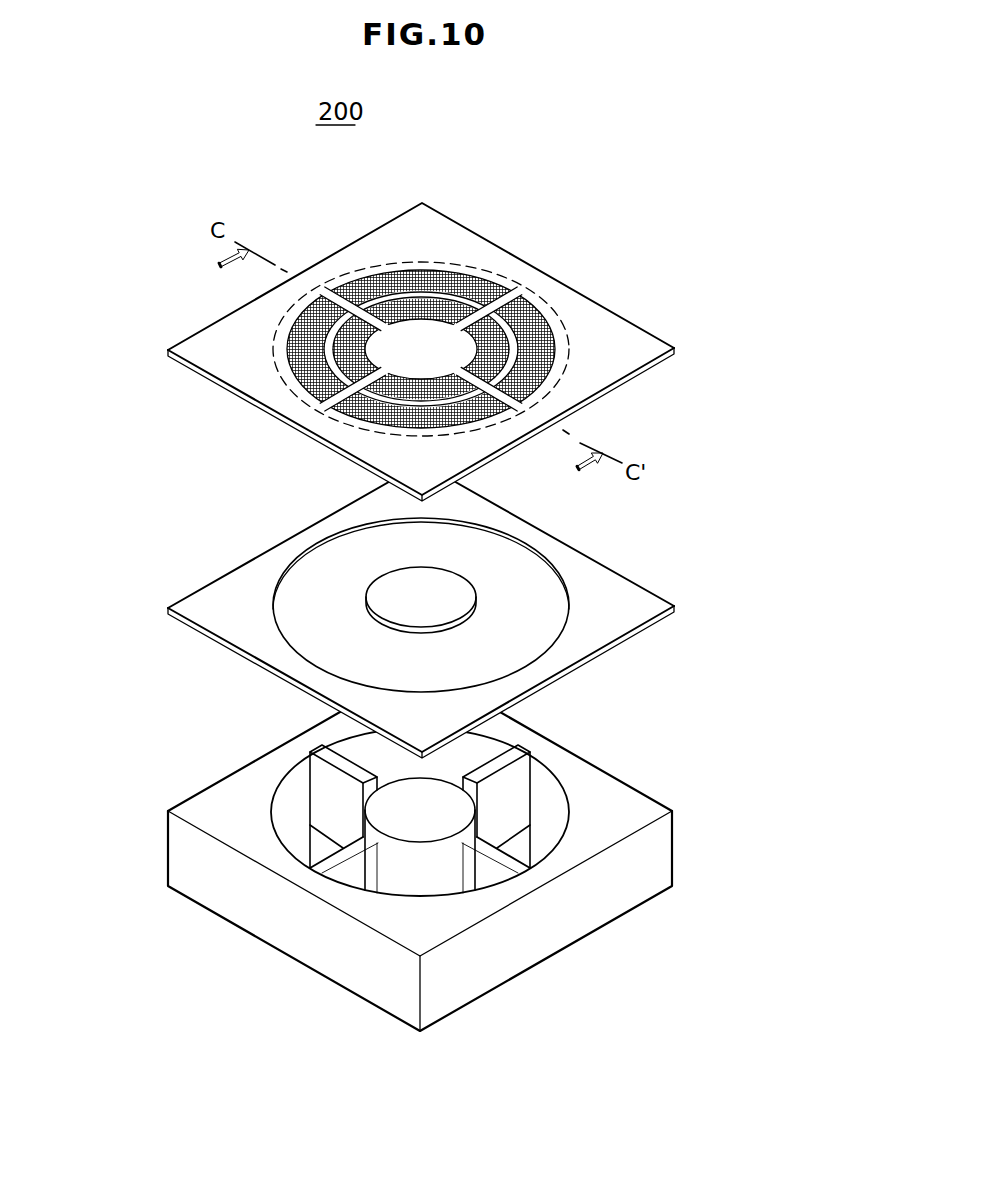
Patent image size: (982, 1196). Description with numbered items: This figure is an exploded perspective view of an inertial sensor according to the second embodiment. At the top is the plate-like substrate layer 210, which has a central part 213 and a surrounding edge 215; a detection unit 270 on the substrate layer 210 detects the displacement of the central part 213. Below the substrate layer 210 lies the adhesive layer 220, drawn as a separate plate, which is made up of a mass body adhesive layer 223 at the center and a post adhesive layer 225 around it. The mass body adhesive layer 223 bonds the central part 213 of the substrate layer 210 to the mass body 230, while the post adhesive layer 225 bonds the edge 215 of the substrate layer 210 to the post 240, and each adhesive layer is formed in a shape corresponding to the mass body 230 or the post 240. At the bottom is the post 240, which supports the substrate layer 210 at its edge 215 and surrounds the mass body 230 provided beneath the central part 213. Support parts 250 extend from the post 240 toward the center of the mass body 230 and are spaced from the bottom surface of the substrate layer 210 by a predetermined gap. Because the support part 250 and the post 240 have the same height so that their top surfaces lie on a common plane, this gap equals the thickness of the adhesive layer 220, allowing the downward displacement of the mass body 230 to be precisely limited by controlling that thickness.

The substrate layer 210 is at (676, 321).
The central part 213 is at (423, 340).
The edge 215 is at (547, 287).
The detection unit 270 is at (538, 343).
The adhesive layer 220 is at (421, 603).
The mass body adhesive layer 223 is at (390, 598).
The post adhesive layer 225 is at (232, 592).
The post 240 is at (190, 861).
The support part 250 is at (341, 856).
The mass body 230 is at (418, 818).